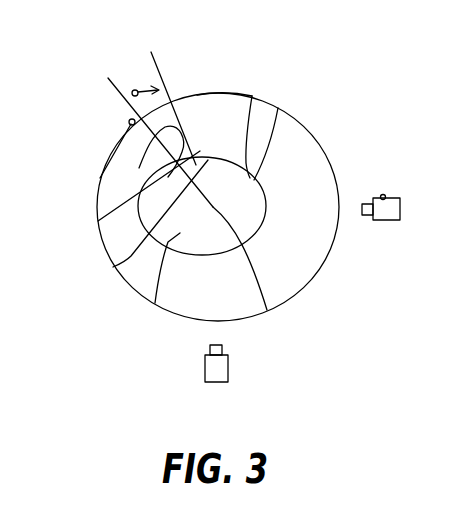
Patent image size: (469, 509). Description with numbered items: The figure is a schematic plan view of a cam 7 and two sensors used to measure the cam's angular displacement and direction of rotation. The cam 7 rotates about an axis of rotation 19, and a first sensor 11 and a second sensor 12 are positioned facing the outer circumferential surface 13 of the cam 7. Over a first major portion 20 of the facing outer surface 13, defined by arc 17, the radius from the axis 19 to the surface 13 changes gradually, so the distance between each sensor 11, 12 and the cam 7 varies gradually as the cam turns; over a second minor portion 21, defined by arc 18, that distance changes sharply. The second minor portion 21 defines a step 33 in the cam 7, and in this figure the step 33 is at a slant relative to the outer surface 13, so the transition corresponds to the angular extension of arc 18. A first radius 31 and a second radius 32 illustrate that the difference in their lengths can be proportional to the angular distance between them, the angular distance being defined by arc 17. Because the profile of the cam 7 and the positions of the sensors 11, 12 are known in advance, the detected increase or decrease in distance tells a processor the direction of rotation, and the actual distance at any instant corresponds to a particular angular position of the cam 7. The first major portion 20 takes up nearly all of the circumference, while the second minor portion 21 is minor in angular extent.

The cam 7 is at (155, 303).
The first sensor 11 is at (218, 383).
The second sensor 12 is at (384, 195).
The facing outer surface 13 is at (278, 108).
The arc 17 is at (217, 93).
The arc 18 is at (136, 91).
The axis of rotation 19 is at (267, 310).
The first major portion 20 is at (252, 96).
The second minor portion 21 is at (98, 221).
The first radius 31 is at (197, 163).
The second radius 32 is at (113, 267).
The step 33 is at (100, 182).